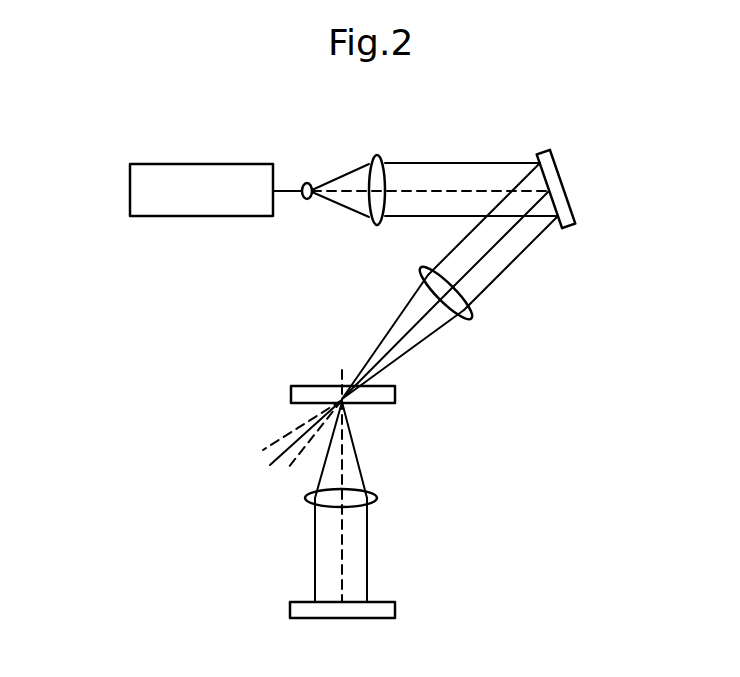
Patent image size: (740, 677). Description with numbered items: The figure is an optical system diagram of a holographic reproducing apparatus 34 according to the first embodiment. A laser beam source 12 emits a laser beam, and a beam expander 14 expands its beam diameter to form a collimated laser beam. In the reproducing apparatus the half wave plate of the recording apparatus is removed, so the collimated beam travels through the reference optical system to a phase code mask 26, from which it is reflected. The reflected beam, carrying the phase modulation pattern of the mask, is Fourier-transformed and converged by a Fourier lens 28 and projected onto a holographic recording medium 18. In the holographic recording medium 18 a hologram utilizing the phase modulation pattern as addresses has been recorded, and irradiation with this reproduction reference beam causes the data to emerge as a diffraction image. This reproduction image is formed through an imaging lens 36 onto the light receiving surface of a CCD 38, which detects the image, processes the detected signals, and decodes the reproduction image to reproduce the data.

The laser beam source 12 is at (183, 164).
The beam expander 14 is at (390, 152).
The holographic recording medium 18 is at (395, 396).
The phase code mask 26 is at (567, 178).
The Fourier lens 28 is at (472, 318).
The holographic reproducing apparatus 34 is at (185, 305).
The imaging lens 36 is at (377, 500).
The CCD 38 is at (395, 608).